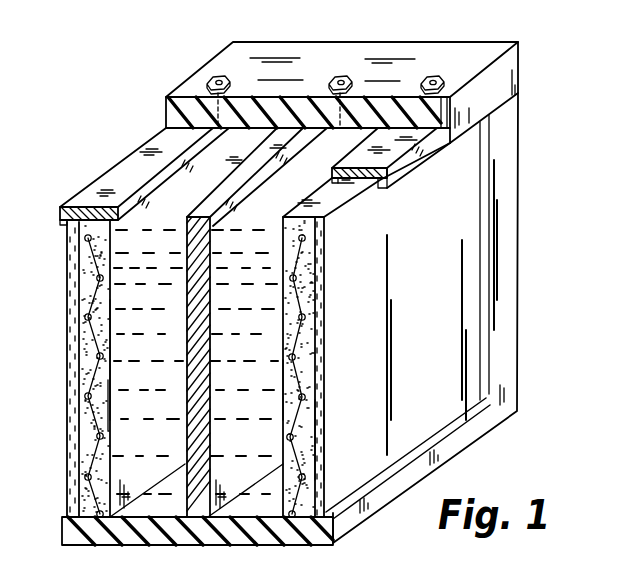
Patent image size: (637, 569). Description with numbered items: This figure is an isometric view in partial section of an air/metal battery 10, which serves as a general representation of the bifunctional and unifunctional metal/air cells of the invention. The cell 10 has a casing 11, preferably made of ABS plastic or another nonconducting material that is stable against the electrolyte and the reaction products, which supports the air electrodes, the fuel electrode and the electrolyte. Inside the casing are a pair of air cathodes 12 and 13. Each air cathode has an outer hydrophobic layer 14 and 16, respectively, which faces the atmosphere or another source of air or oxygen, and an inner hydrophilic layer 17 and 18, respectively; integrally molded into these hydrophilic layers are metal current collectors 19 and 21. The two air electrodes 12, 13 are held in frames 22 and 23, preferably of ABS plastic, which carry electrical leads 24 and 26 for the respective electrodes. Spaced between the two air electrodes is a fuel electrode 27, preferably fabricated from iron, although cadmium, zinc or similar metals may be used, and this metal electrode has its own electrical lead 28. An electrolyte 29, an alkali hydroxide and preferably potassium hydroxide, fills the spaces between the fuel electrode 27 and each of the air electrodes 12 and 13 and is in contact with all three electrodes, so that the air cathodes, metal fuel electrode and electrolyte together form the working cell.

The battery 10 is at (517, 287).
The casing 11 is at (502, 364).
The air cathode 12 is at (323, 441).
The air cathode 13 is at (68, 387).
The outer hydrophobic layer 14 is at (322, 280).
The outer hydrophobic layer 16 is at (73, 263).
The hydrophilic layer 17 is at (292, 386).
The hydrophilic layer 18 is at (110, 400).
The metal current collector 19 is at (296, 356).
The metal current collector 21 is at (110, 352).
The frame 22 is at (403, 157).
The frame 23 is at (130, 164).
The electrical lead 24 is at (440, 76).
The electrical lead 26 is at (214, 79).
The fuel electrode 27 is at (270, 310).
The electrical lead 28 is at (341, 76).
The electrolyte 29 is at (137, 229).